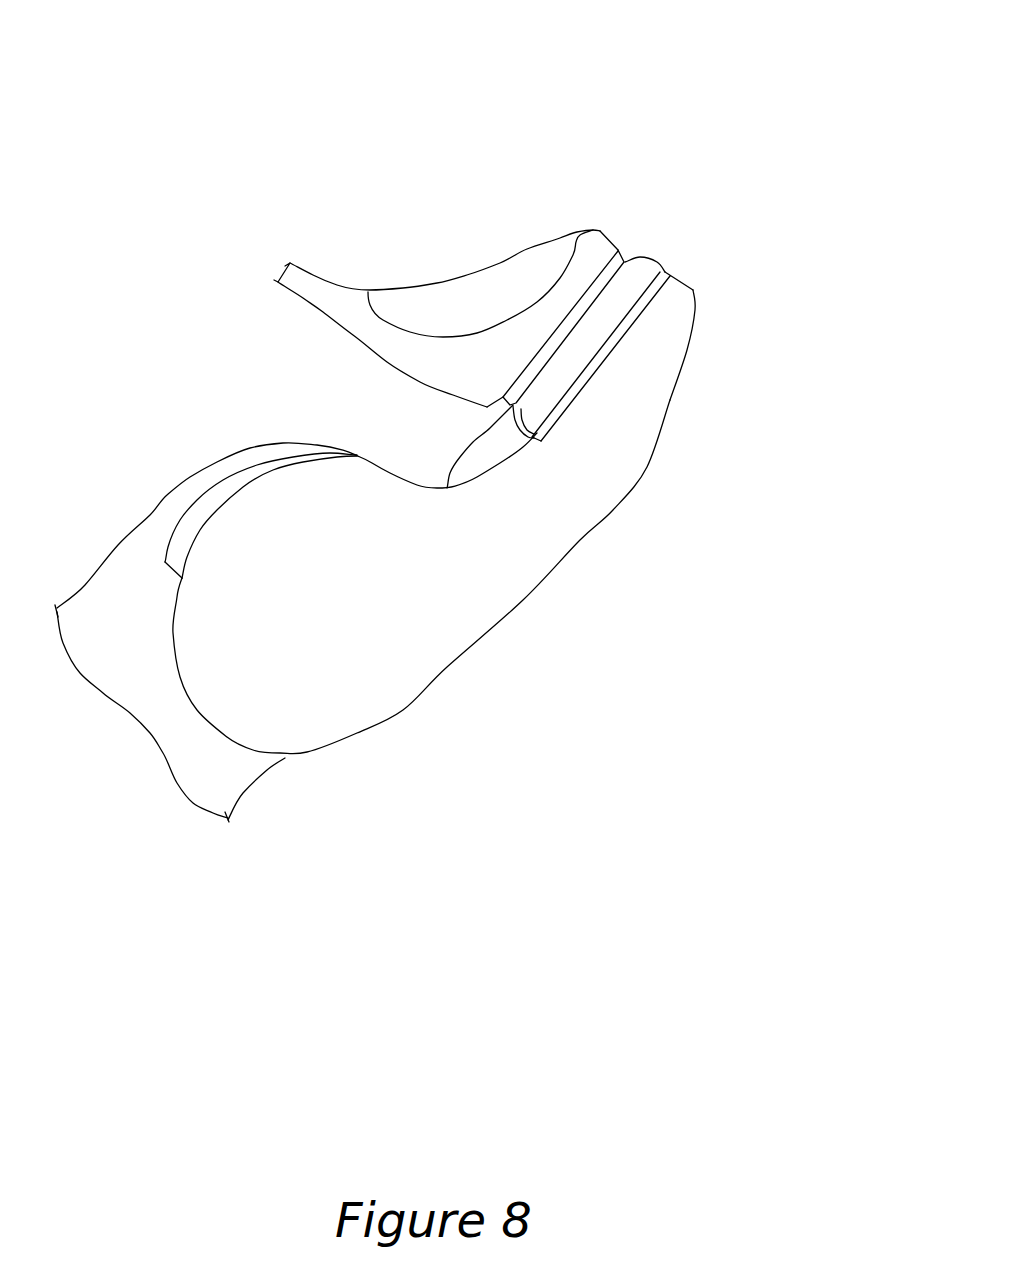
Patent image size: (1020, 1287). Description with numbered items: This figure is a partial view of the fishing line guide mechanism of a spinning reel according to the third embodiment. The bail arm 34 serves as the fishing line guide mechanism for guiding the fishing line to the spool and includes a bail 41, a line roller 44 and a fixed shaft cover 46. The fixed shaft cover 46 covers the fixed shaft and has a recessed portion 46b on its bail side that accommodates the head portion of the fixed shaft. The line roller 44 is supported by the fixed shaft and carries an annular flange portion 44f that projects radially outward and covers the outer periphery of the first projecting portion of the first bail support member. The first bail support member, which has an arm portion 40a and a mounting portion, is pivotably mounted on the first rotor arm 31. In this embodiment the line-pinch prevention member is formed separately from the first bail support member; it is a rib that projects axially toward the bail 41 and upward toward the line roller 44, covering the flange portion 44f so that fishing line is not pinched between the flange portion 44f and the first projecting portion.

The bail arm 34 is at (708, 110).
The bail 41 is at (303, 270).
The fixed shaft cover 46 is at (608, 247).
The recessed portion 46b is at (527, 263).
The line roller 44 is at (632, 258).
The flange portion 44f is at (643, 263).
The arm portion 40a is at (573, 522).
The first rotor arm 31 is at (243, 770).